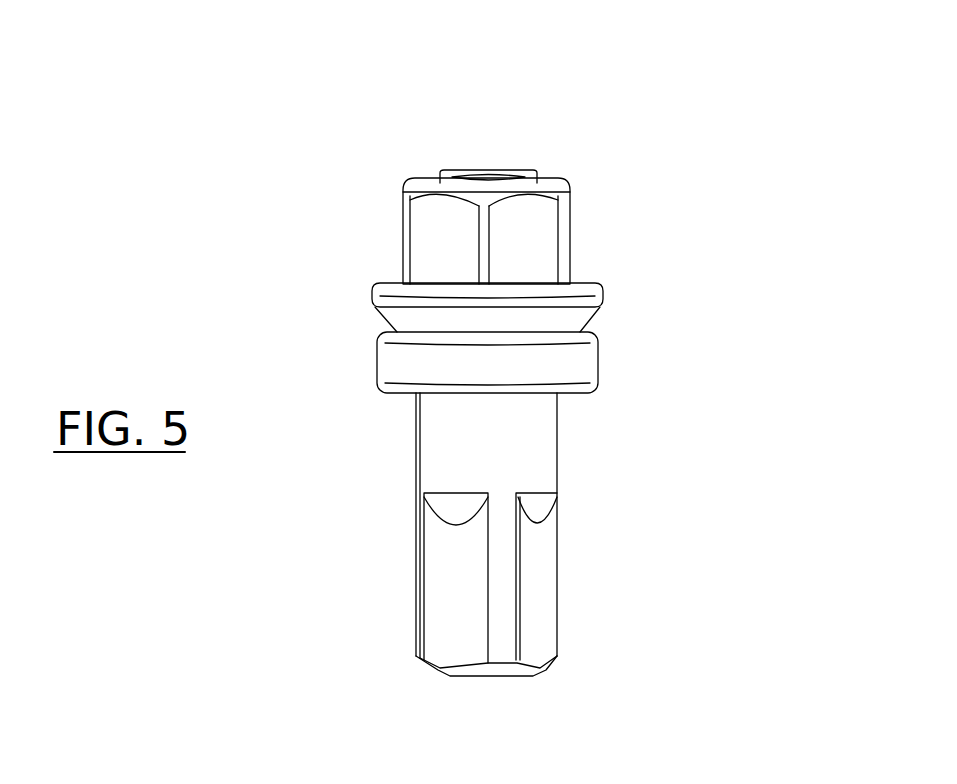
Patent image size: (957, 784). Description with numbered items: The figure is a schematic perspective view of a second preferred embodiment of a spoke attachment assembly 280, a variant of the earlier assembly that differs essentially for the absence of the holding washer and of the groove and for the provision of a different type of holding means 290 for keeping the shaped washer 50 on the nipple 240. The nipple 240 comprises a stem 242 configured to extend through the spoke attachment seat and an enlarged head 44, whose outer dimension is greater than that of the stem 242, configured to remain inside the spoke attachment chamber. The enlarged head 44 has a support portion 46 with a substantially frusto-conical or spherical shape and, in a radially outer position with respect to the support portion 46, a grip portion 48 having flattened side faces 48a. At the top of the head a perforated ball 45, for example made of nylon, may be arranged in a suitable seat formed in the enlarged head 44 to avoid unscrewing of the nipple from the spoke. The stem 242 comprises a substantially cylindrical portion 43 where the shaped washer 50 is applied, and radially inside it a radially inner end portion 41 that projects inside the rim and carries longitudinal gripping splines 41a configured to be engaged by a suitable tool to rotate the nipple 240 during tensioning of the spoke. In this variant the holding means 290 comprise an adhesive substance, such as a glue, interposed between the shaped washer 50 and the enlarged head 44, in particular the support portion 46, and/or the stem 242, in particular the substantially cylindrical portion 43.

The spoke attachment assembly 280 is at (640, 106).
The nipple 240 is at (272, 208).
The perforated ball 45 is at (455, 171).
The grip portion 48 is at (578, 238).
The flattened side faces 48a is at (568, 262).
The enlarged head 44 is at (621, 291).
The support portion 46 is at (378, 316).
The shaped washer 50 is at (575, 362).
The holding means 290 is at (408, 397).
The substantially cylindrical portion 43 is at (563, 425).
The stem 242 is at (596, 511).
The longitudinal gripping splines 41a is at (455, 585).
The radially inner end portion 41 is at (563, 598).